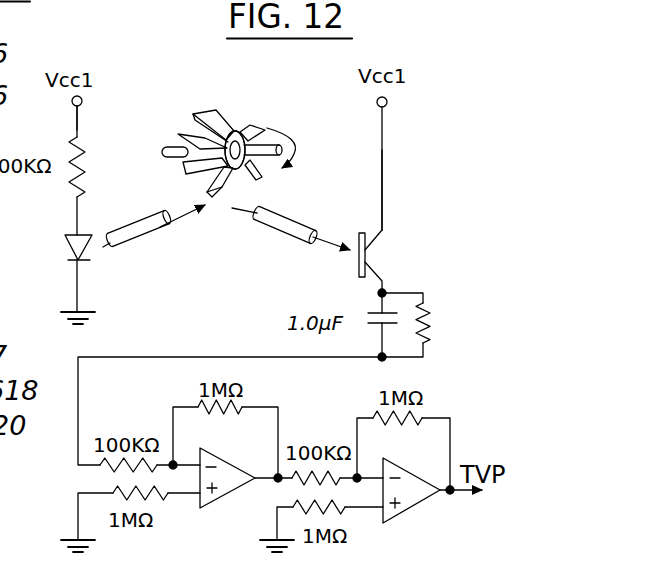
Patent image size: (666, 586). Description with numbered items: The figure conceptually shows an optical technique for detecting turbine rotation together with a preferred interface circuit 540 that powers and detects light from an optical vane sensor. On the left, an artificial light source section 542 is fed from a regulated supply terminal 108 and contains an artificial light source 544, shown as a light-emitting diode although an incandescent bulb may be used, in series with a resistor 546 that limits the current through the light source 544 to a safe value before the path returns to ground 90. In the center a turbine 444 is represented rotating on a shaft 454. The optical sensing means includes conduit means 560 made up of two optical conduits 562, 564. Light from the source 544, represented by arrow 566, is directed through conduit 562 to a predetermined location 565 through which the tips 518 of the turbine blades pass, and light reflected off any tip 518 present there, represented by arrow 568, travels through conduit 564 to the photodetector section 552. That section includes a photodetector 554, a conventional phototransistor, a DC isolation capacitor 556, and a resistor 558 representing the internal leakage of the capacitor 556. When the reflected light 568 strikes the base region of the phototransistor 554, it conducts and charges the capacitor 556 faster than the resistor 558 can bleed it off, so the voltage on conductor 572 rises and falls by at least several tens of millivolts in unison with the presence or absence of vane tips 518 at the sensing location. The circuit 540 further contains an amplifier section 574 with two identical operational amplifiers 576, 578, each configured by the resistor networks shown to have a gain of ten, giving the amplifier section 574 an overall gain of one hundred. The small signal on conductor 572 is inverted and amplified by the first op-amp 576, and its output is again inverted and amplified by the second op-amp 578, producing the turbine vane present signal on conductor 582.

The circuit 540 is at (312, 96).
The artificial light source section 542 is at (106, 94).
The Vcc1 power supply terminal 108 is at (77, 113).
The resistor 546 is at (72, 184).
The artificial light source 544 is at (66, 242).
The ground 90 is at (72, 311).
The turbine 444 is at (211, 113).
The shaft 454 is at (175, 135).
The tips of the blades 518 is at (182, 181).
The predetermined location 565 is at (227, 191).
The optical conduit 562 is at (134, 245).
The arrow representing light from the source 566 is at (179, 212).
The optical conduit 564 is at (276, 233).
The arrow representing reflected light 568 is at (345, 213).
The conduit means 560 is at (271, 251).
The photodetector section 552 is at (416, 171).
The photodetector 554 is at (373, 246).
The DC isolation capacitor 556 is at (370, 308).
The resistor 558 is at (428, 313).
The conductor 572 is at (135, 357).
The operational amplifier 576 is at (242, 445).
The amplifier section 574 is at (223, 512).
The operational amplifier 578 is at (420, 453).
The conductor 582 is at (460, 493).